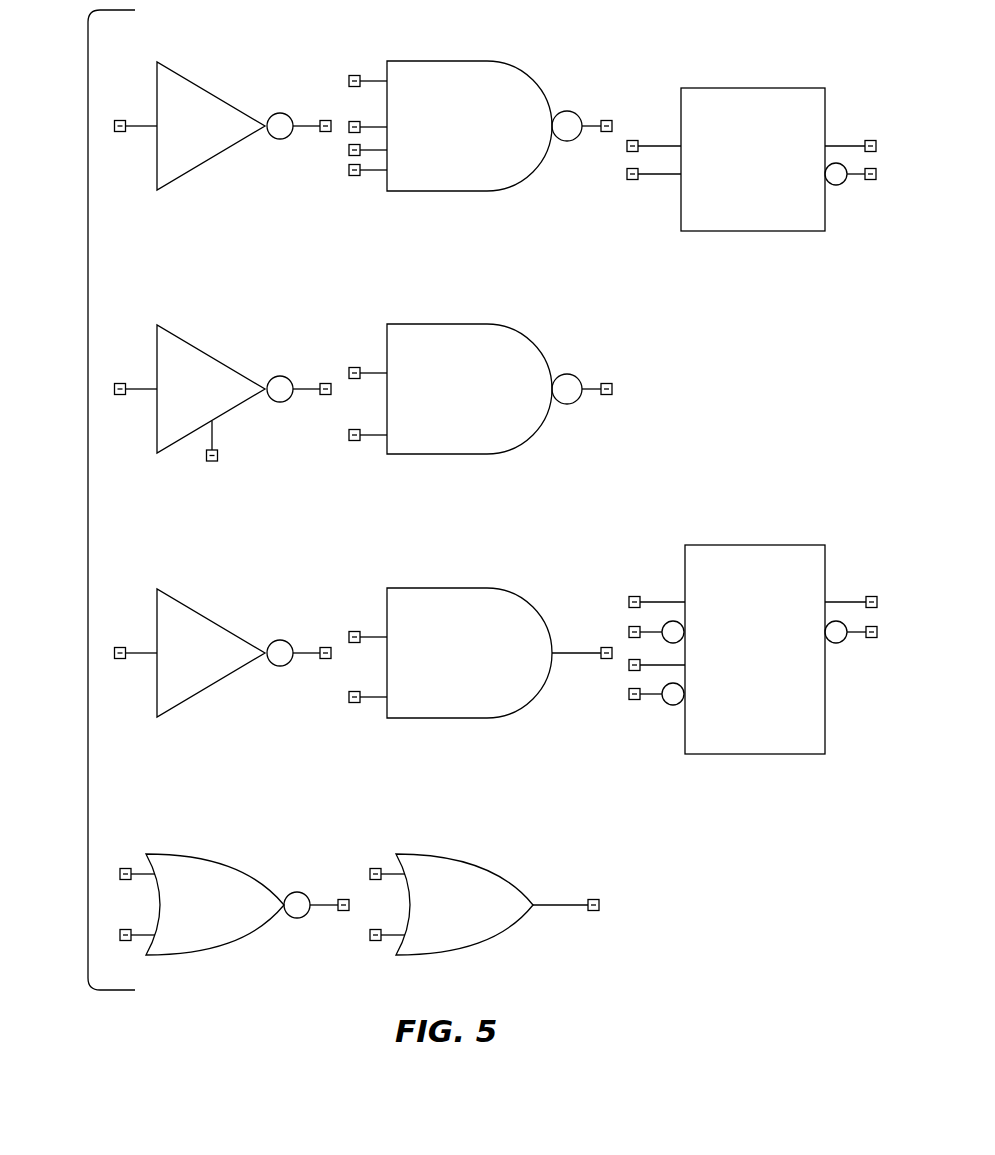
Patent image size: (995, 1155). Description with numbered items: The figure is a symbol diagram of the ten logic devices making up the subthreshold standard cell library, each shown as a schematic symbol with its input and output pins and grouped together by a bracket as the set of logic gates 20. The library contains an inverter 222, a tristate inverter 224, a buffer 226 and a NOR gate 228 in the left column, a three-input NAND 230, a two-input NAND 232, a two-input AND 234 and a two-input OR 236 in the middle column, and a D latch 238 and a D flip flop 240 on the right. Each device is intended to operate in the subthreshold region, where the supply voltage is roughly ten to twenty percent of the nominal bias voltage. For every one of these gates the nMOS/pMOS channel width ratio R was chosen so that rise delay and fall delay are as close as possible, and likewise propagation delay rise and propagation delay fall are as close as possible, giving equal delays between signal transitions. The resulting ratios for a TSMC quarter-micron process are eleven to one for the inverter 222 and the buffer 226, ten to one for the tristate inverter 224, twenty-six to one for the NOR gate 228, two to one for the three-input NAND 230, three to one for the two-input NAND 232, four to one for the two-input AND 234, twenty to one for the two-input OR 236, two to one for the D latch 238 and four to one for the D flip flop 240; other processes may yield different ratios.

The logic gate 20 is at (88, 513).
The inverter 222 is at (240, 106).
The tristate inverter 224 is at (240, 368).
The buffer 226 is at (240, 634).
The NOR gate 228 is at (253, 868).
The three-input NAND 230 is at (532, 78).
The two-input NAND 232 is at (532, 343).
The two-input AND 234 is at (532, 605).
The two-input OR 236 is at (503, 868).
The D latch 238 is at (793, 87).
The D flip flop 240 is at (793, 543).